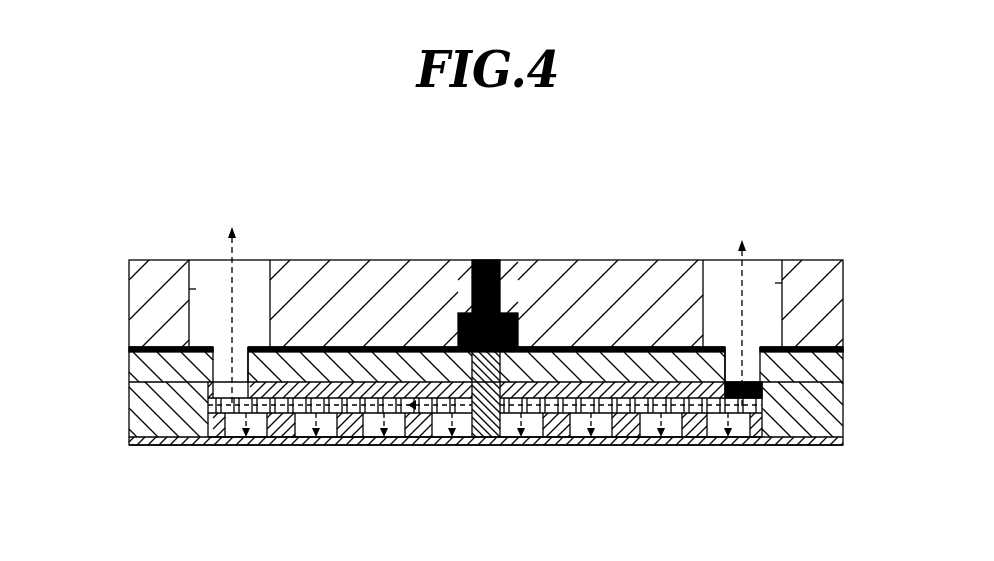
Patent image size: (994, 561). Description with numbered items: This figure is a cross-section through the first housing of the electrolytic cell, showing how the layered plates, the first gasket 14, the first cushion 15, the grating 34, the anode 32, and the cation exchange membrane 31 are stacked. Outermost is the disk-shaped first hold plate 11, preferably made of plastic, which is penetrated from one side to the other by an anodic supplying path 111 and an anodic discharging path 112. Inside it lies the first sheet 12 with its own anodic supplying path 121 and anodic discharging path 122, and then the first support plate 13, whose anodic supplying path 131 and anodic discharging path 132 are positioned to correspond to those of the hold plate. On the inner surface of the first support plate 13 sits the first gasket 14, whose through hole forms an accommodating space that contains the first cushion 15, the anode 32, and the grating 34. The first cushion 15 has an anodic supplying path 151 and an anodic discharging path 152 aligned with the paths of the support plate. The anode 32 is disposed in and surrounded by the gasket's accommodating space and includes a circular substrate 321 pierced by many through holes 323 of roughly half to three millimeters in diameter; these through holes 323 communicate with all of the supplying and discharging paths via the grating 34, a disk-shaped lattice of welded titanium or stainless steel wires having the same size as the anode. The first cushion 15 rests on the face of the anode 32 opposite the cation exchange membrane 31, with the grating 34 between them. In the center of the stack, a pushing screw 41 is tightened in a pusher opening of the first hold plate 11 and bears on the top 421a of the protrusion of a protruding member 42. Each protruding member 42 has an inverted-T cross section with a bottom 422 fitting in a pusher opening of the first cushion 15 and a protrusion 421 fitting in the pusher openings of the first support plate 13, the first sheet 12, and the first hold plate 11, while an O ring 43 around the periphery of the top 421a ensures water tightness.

The first hold plate 11 is at (843, 307).
The anodic supplying path 111 is at (782, 283).
The anodic discharging path 112 is at (190, 289).
The first sheet 12 is at (843, 345).
The anodic supplying path 121 is at (732, 347).
The anodic discharging path 122 is at (248, 347).
The first support plate 13 is at (843, 365).
The anodic supplying path 131 is at (757, 370).
The anodic discharging path 132 is at (213, 377).
The first gasket 14 is at (122, 436).
The first cushion 15 is at (563, 383).
The anodic supplying path 151 is at (748, 390).
The anodic discharging path 152 is at (207, 400).
The cation exchange membrane 31 is at (838, 447).
The anode 32 is at (200, 422).
The substrate 321 is at (758, 438).
The through holes 323 is at (620, 438).
The grating 34 is at (207, 407).
The pushing screw 41 is at (500, 262).
The protruding member 42 is at (307, 207).
The protrusion 421 is at (462, 365).
The top of the protrusion 421a is at (477, 300).
The bottom 422 is at (440, 372).
The O ring 43 is at (508, 318).